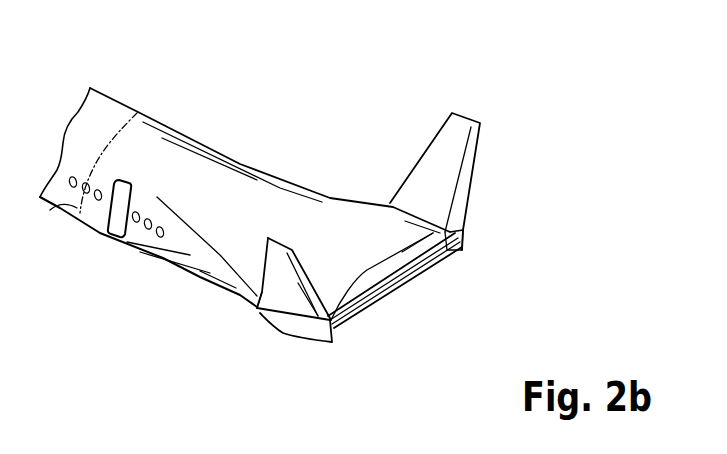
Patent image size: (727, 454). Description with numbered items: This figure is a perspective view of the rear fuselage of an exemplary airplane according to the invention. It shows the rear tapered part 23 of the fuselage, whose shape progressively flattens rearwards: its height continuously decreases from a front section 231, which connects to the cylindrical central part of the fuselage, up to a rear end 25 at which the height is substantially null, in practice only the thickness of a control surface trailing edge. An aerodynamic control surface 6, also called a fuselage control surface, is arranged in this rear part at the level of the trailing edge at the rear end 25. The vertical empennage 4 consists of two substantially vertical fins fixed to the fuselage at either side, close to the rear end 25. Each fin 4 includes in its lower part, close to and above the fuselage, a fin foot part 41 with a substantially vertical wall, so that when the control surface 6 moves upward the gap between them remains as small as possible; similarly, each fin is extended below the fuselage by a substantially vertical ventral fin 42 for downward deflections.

The rear tapered part 23 is at (198, 168).
The front section 231 is at (58, 215).
The vertical empennage 4 is at (281, 256).
The fin foot part 41 is at (255, 313).
The ventral fin 42 is at (303, 333).
The aerodynamic control surface 6 is at (428, 250).
The rear end 25 is at (380, 303).